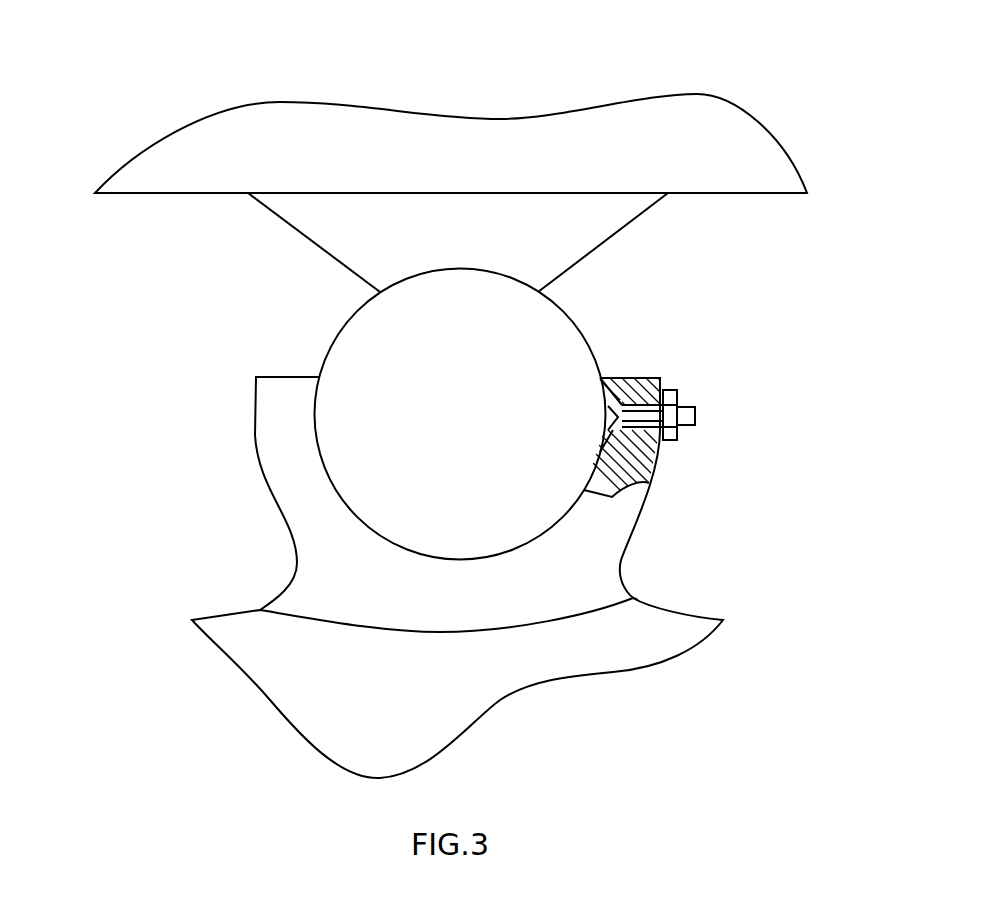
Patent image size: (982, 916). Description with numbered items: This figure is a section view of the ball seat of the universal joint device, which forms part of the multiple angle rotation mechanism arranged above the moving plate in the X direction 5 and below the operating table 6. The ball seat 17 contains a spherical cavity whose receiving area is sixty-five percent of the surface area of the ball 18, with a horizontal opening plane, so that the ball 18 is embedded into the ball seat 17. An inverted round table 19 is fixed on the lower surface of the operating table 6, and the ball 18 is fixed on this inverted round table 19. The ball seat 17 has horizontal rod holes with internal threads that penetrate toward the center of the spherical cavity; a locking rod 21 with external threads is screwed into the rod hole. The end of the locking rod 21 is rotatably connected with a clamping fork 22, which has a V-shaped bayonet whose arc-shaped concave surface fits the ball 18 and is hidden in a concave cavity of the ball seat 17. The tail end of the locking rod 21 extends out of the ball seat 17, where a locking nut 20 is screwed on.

The moving plate in the X direction 5 is at (580, 642).
The operating table 6 is at (718, 162).
The ball seat 17 is at (277, 456).
The ball 18 is at (380, 412).
The inverted round table 19 is at (576, 226).
The locking nut 20 is at (672, 410).
The locking rod 21 is at (688, 417).
The clamping fork 22 is at (657, 472).